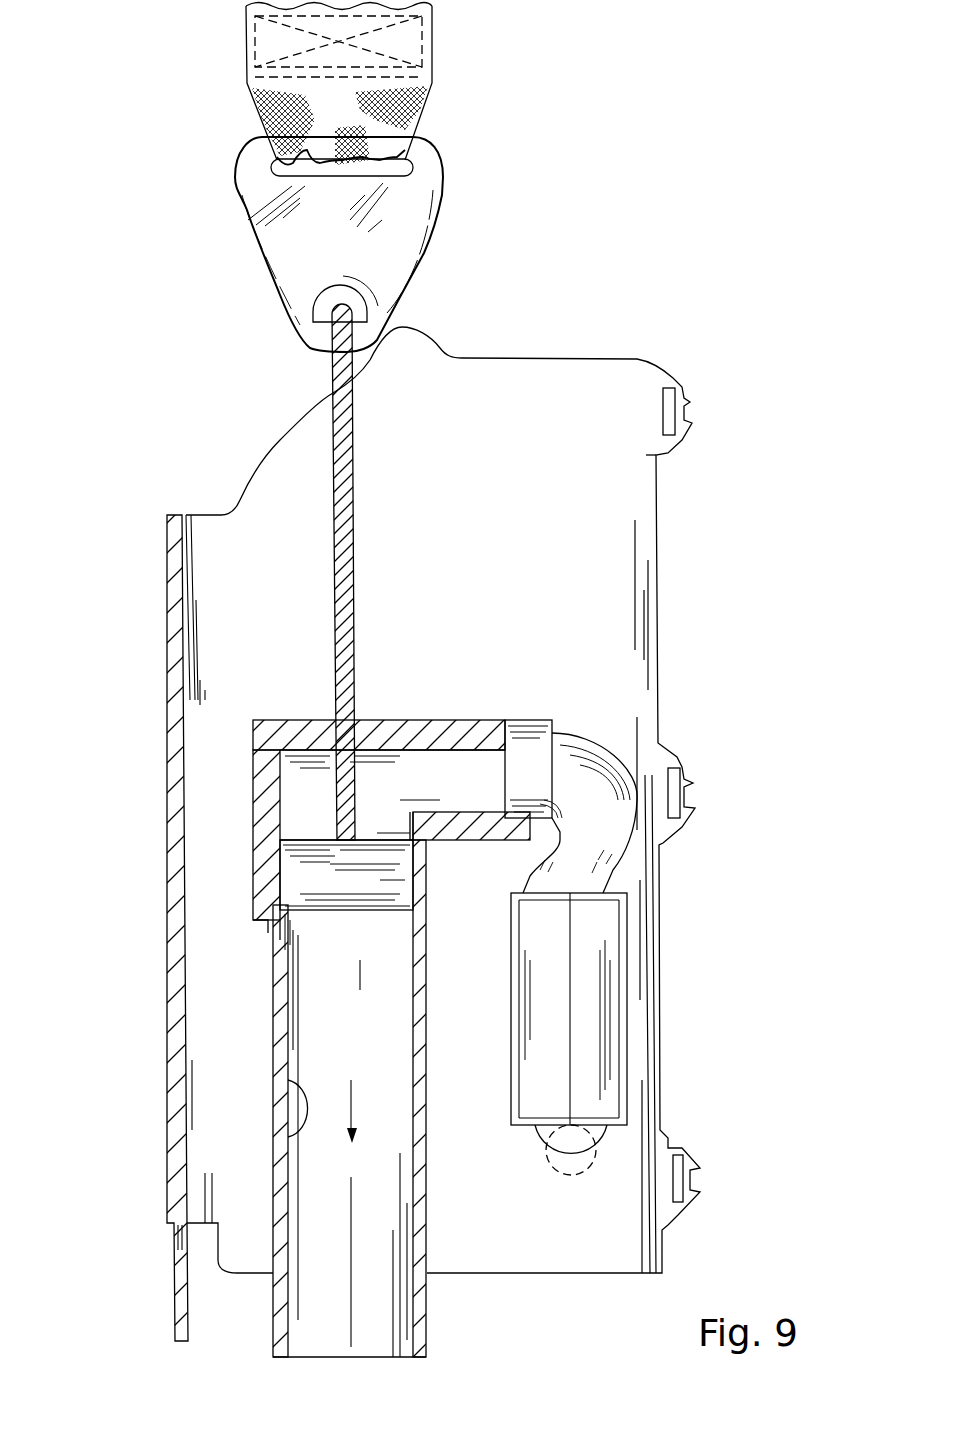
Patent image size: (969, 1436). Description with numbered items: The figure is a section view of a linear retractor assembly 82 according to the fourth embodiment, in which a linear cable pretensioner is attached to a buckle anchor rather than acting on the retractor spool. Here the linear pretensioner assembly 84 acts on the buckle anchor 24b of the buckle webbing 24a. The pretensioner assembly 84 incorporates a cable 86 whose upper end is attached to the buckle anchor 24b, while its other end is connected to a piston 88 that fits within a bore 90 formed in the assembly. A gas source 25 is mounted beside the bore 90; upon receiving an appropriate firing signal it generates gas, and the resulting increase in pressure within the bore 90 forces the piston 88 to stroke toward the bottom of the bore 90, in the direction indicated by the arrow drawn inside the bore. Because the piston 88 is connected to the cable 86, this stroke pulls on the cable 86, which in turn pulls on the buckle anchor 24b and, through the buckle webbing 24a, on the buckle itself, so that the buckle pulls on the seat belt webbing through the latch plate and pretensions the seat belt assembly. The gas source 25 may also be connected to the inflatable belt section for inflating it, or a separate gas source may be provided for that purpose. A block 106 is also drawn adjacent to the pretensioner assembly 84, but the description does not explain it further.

The buckle webbing 24a is at (262, 45).
The buckle anchor 24b is at (400, 250).
The linear retractor assembly 82 is at (703, 447).
The linear pretensioner assembly 84 is at (593, 722).
The cable 86 is at (330, 478).
The piston 88 is at (300, 878).
The bore 90 is at (297, 1131).
The block 106 is at (540, 778).
The gas source 25 is at (595, 1043).